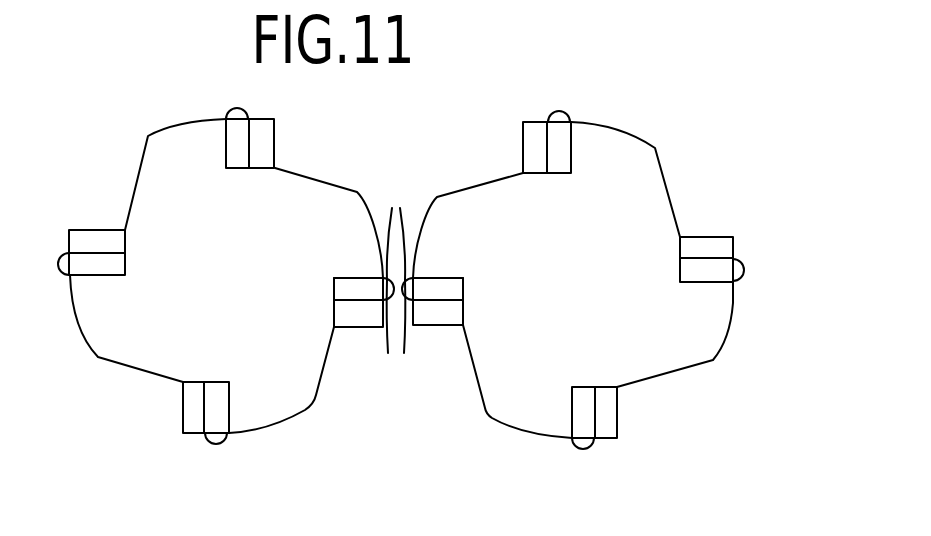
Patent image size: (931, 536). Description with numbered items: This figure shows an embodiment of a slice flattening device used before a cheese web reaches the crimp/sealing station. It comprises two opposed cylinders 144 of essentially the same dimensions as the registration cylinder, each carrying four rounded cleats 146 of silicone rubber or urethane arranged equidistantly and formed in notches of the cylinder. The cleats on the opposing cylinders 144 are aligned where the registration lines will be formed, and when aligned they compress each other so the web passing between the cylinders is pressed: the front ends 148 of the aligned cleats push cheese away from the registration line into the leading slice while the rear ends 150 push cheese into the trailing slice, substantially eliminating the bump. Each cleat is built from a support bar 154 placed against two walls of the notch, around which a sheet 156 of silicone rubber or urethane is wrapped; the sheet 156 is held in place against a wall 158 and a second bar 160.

The slice flattening cylinder 144 is at (250, 223).
The rounded cleat 146 is at (558, 112).
The front end 148 is at (397, 231).
The rear end 150 is at (397, 333).
The support bar 154 is at (406, 283).
The sheet of silicone rubber or urethane 156 is at (592, 442).
The wall 158 is at (341, 278).
The second bar 160 is at (352, 308).